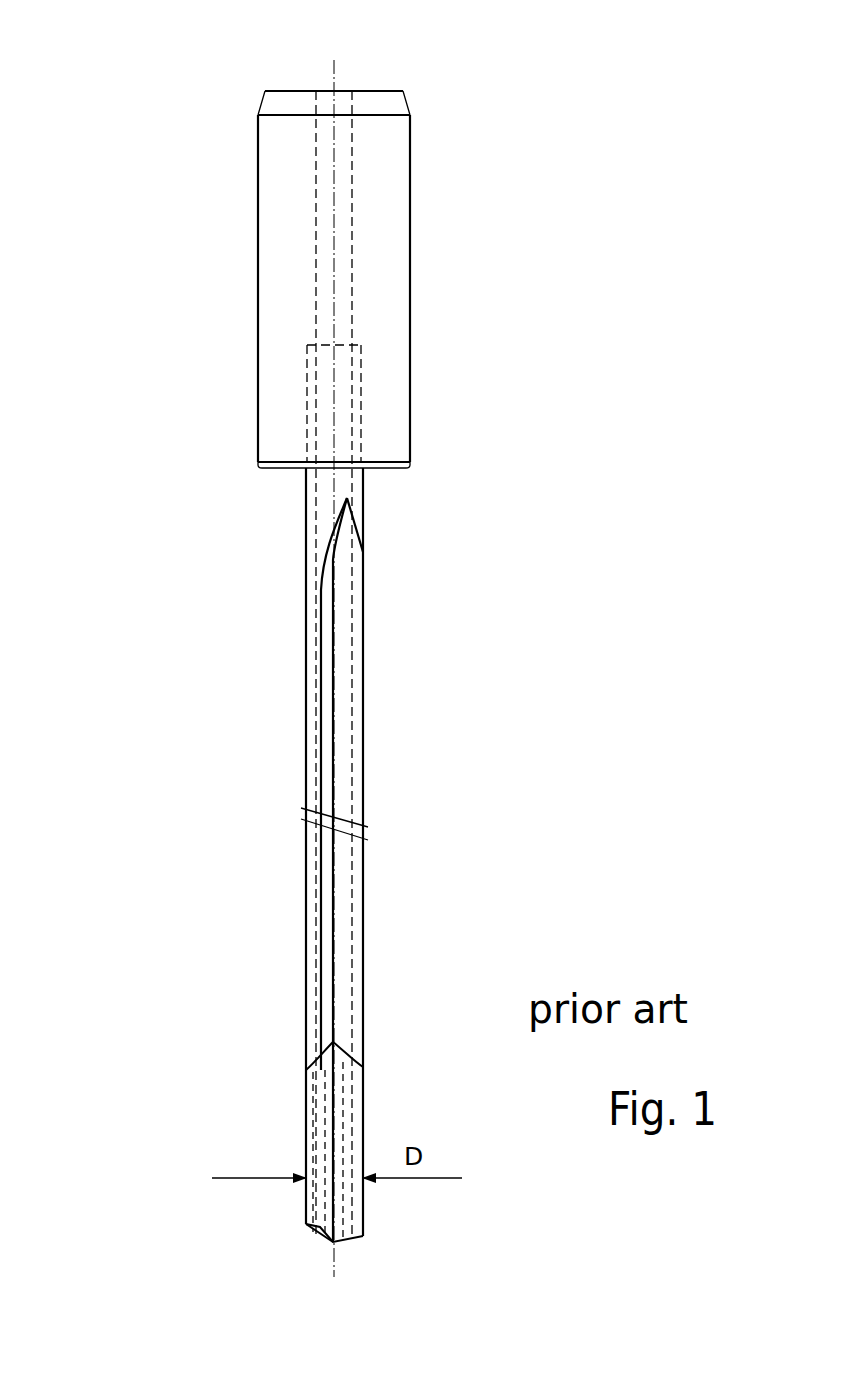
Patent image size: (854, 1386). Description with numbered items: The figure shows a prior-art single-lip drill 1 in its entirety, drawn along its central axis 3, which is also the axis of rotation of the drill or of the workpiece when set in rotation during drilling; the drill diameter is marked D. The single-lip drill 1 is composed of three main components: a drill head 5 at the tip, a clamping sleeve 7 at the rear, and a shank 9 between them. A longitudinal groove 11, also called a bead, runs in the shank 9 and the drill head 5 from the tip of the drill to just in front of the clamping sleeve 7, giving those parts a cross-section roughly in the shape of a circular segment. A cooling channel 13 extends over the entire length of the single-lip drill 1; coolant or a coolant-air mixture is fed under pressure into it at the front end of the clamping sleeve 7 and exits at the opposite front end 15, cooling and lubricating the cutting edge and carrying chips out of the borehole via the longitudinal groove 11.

The single-lip drill 1 is at (540, 318).
The central axis 3 is at (335, 76).
The drill head 5 is at (242, 1142).
The clamping sleeve 7 is at (278, 428).
The shank 9 is at (215, 865).
The longitudinal groove 11 is at (342, 750).
The cooling channel 13 is at (350, 248).
The front end 15 is at (313, 1243).